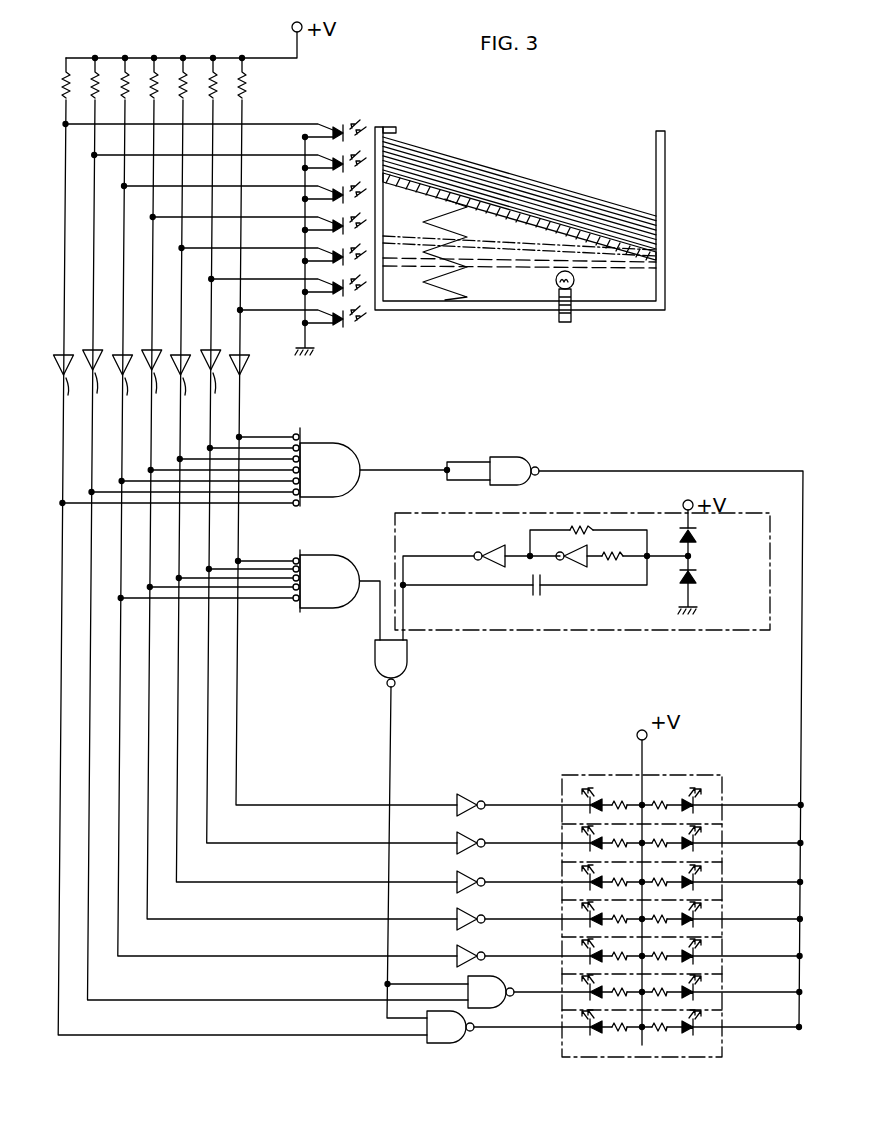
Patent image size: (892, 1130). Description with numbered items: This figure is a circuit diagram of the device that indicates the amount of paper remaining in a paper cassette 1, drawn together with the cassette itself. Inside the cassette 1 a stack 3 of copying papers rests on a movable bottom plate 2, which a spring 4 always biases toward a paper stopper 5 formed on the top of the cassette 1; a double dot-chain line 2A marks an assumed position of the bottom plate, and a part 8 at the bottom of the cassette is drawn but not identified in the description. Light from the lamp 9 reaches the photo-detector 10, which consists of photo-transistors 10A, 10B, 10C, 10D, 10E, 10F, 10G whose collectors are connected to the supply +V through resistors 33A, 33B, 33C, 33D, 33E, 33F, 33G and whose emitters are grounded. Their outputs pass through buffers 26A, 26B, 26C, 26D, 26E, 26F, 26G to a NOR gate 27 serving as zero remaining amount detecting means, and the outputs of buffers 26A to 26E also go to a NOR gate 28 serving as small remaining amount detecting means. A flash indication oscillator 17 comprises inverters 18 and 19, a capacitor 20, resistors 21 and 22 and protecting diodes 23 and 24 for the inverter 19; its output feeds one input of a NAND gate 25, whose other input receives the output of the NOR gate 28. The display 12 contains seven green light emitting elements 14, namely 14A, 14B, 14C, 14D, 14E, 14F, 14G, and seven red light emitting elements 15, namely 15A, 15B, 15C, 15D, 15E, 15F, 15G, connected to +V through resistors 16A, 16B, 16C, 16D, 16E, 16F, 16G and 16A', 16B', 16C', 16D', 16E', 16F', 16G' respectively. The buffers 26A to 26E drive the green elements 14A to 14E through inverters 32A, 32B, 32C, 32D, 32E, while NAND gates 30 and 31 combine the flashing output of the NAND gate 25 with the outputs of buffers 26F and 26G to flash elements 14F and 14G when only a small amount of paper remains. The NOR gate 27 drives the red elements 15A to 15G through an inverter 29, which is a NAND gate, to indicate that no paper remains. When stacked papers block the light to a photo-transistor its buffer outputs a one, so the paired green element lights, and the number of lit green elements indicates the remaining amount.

The paper cassette 1 is at (665, 140).
The movable bottom plate 2 is at (636, 262).
The double dot-chain line 2A is at (527, 245).
The paper stack 3 is at (637, 214).
The spring 4 is at (470, 225).
The paper stopper 5 is at (384, 126).
The bottom 8 is at (406, 312).
The lamp 9 is at (575, 281).
The photo-detector 10 is at (346, 120).
The photo-transistor 10A is at (330, 315).
The photo-transistor 10B is at (330, 284).
The photo-transistor 10C is at (330, 253).
The photo-transistor 10D is at (330, 222).
The photo-transistor 10E is at (330, 191).
The photo-transistor 10F is at (330, 160).
The photo-transistor 10G is at (330, 128).
The display 12 is at (714, 1062).
The green light emitting elements 14 is at (608, 1051).
The green light emitting element 14A is at (585, 802).
The green light emitting element 14B is at (585, 840).
The green light emitting element 14C is at (585, 879).
The green light emitting element 14D is at (585, 916).
The green light emitting element 14E is at (585, 953).
The green light emitting element 14F is at (585, 989).
The green light emitting element 14G is at (586, 1033).
The red light emitting elements 15 is at (689, 1109).
The red light emitting element 15A is at (698, 802).
The red light emitting element 15B is at (698, 840).
The red light emitting element 15C is at (698, 879).
The red light emitting element 15D is at (698, 916).
The red light emitting element 15E is at (698, 953).
The red light emitting element 15F is at (698, 989).
The red light emitting element 15G is at (698, 1024).
The resistor 16A is at (575, 769).
The resistor 16B is at (619, 843).
The resistor 16C is at (619, 882).
The resistor 16D is at (619, 919).
The resistor 16E is at (619, 956).
The resistor 16F is at (619, 992).
The resistor 16G is at (619, 1027).
The resistor 16A' is at (707, 769).
The resistor 16B' is at (659, 843).
The resistor 16C' is at (659, 882).
The resistor 16D' is at (659, 919).
The resistor 16E' is at (659, 956).
The resistor 16F' is at (659, 992).
The resistor 16G' is at (659, 1027).
The flash indication oscillator 17 is at (690, 632).
The inverter 18 is at (495, 569).
The inverter 19 is at (577, 569).
The capacitor 20 is at (537, 598).
The resistor 21 is at (612, 562).
The resistor 22 is at (582, 528).
The protecting diode 23 is at (700, 578).
The protecting diode 24 is at (700, 532).
The NAND gate 25 is at (373, 655).
The buffer 26A is at (247, 373).
The buffer 26B is at (329, 471).
The buffer 26C is at (314, 491).
The buffer 26D is at (299, 509).
The buffer 26E is at (285, 528).
The buffer 26F is at (275, 550).
The buffer 26G is at (241, 567).
The NOR gate 27 is at (338, 443).
The NOR gate 28 is at (333, 557).
The inverter 29 is at (508, 457).
The NAND gate 30 is at (500, 1009).
The NAND gate 31 is at (437, 1045).
The inverter 32A is at (457, 799).
The inverter 32B is at (457, 837).
The inverter 32C is at (457, 876).
The inverter 32D is at (457, 913).
The inverter 32E is at (457, 950).
The resistor 33A is at (240, 80).
The resistor 33B is at (213, 78).
The resistor 33C is at (183, 78).
The resistor 33D is at (154, 78).
The resistor 33E is at (125, 78).
The resistor 33F is at (95, 78).
The resistor 33G is at (66, 78).